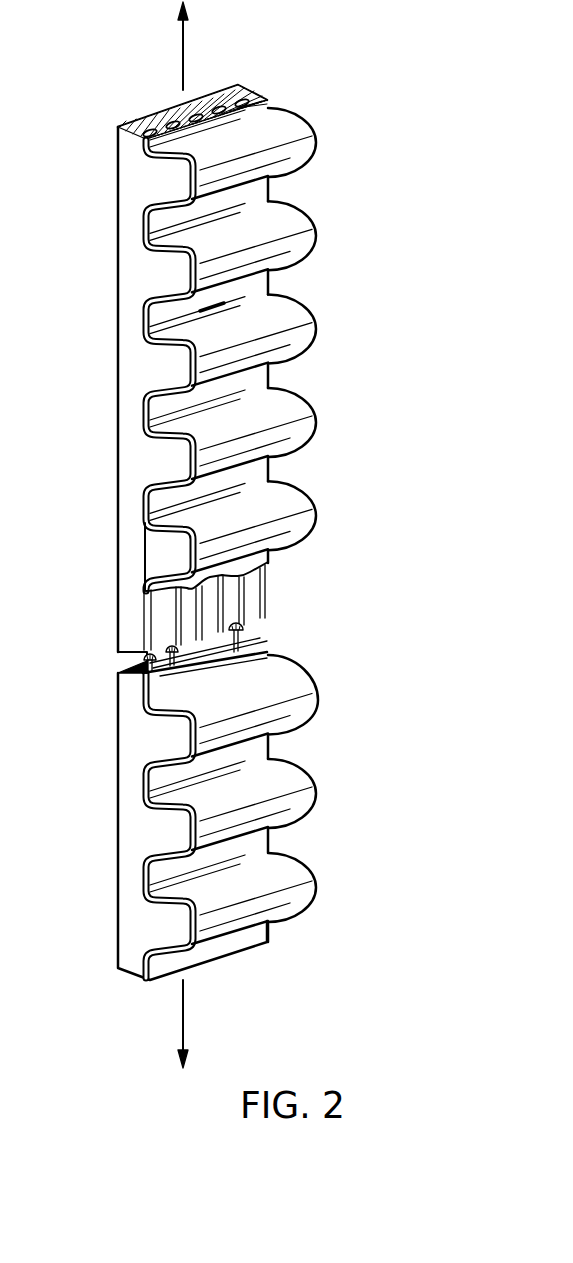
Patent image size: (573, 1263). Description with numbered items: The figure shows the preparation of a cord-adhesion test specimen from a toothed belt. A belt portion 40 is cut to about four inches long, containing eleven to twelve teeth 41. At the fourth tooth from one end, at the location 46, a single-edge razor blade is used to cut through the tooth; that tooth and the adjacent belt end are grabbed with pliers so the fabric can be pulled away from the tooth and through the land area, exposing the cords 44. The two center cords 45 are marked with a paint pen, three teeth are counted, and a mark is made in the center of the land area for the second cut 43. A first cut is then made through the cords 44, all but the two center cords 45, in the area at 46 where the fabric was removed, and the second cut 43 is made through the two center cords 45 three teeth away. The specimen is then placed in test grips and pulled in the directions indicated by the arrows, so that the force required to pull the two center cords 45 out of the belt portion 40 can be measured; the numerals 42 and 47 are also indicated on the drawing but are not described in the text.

The belt portion 40 is at (310, 86).
The teeth 41 is at (310, 234).
The base plate top surface 42 is at (152, 132).
The second cut 43 is at (215, 301).
The cords 44 is at (243, 623).
The two center cords 45 is at (222, 672).
The cut location 46 is at (112, 667).
The fin bend 47 is at (173, 538).